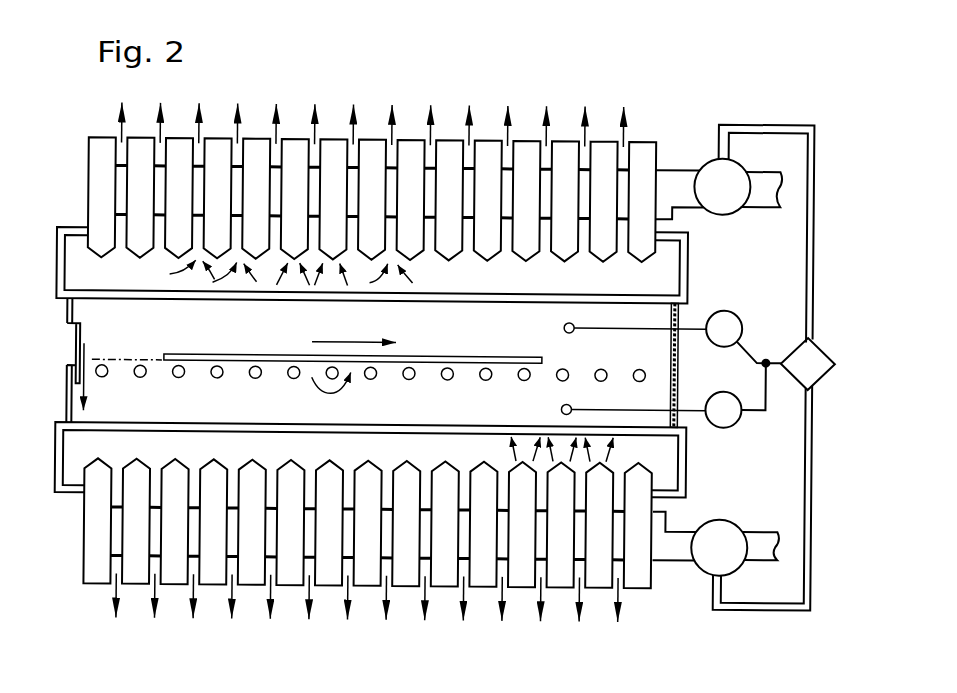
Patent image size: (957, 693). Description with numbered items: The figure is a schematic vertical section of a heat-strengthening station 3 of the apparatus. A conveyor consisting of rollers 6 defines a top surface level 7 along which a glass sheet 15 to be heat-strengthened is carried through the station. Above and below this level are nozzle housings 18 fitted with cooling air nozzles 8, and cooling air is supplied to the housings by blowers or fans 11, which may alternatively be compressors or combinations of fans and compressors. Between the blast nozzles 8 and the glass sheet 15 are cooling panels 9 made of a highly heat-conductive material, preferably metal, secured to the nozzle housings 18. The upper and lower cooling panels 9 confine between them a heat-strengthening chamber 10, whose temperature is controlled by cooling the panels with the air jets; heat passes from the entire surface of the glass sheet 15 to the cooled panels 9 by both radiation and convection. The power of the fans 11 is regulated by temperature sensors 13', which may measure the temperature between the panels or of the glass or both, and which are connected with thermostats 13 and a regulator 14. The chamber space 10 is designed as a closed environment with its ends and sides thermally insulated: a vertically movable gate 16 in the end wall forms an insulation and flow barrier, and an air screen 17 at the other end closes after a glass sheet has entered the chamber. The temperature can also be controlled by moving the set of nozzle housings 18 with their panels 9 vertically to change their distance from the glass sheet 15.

The station 3 is at (70, 528).
The rollers 6 is at (108, 372).
The top surface level 7 is at (112, 360).
The cooling air nozzles 8 is at (144, 242).
The cooling panels 9 is at (257, 292).
The heat-strengthening chamber 10 is at (212, 343).
The blowers or fans 11 is at (712, 162).
The thermostats 13 is at (743, 360).
The temperature sensors 13' is at (603, 368).
The regulator 14 is at (800, 340).
The glass sheet 15 is at (410, 351).
The vertically movable gate 16 is at (70, 352).
The air screen 17 is at (680, 370).
The nozzle housings 18 is at (88, 160).